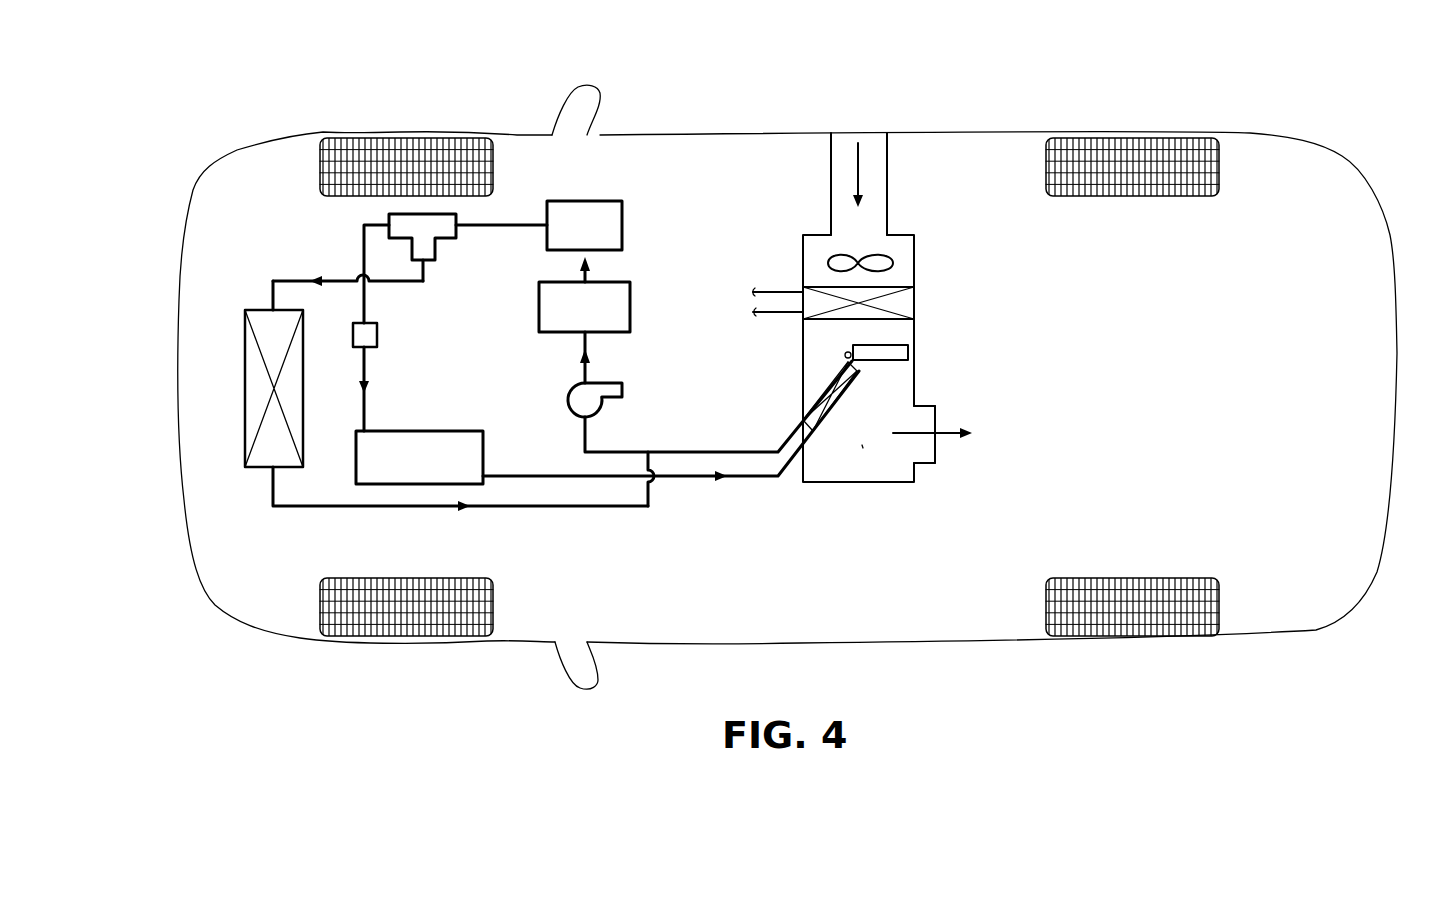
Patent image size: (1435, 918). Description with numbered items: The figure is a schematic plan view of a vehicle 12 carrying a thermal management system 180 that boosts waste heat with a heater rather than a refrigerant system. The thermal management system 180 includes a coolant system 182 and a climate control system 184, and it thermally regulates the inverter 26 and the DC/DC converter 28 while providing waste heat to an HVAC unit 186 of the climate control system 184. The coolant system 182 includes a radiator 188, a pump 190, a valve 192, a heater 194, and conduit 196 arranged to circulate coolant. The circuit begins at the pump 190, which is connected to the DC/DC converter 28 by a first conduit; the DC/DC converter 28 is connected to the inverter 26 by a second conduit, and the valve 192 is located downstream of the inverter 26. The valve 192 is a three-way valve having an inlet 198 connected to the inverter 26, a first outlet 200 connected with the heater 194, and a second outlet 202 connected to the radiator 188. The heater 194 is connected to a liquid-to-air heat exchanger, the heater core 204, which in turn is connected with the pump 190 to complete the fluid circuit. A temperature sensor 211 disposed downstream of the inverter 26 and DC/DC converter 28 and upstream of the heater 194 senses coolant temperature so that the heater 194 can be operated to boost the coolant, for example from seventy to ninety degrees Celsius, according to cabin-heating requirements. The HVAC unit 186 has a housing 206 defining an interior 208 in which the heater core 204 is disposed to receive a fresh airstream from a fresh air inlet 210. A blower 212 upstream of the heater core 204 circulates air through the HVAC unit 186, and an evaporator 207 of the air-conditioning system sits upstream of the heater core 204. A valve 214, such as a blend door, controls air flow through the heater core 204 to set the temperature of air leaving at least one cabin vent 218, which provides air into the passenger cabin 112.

The vehicle 12 is at (517, 135).
The passenger cabin 112 is at (1275, 173).
The thermal management system 180 is at (739, 158).
The coolant system 182 is at (527, 545).
The climate control system 184 is at (992, 331).
The HVAC unit 186 is at (914, 383).
The radiator 188 is at (256, 387).
The pump 190 is at (578, 400).
The valve 192 is at (424, 226).
The heater 194 is at (443, 427).
The conduit 196 is at (318, 510).
The inlet 198 is at (457, 218).
The first outlet 200 is at (389, 224).
The second outlet 202 is at (428, 263).
The heater core 204 is at (825, 387).
The housing 206 is at (913, 260).
The evaporator 207 is at (813, 303).
The interior 208 is at (863, 448).
The fresh air inlet 210 is at (888, 183).
The temperature sensor 211 is at (378, 340).
The blower 212 is at (887, 263).
The valve 214 is at (882, 362).
The cabin vent 218 is at (935, 448).
The inverter 26 is at (622, 226).
The DC/DC converter 28 is at (631, 306).